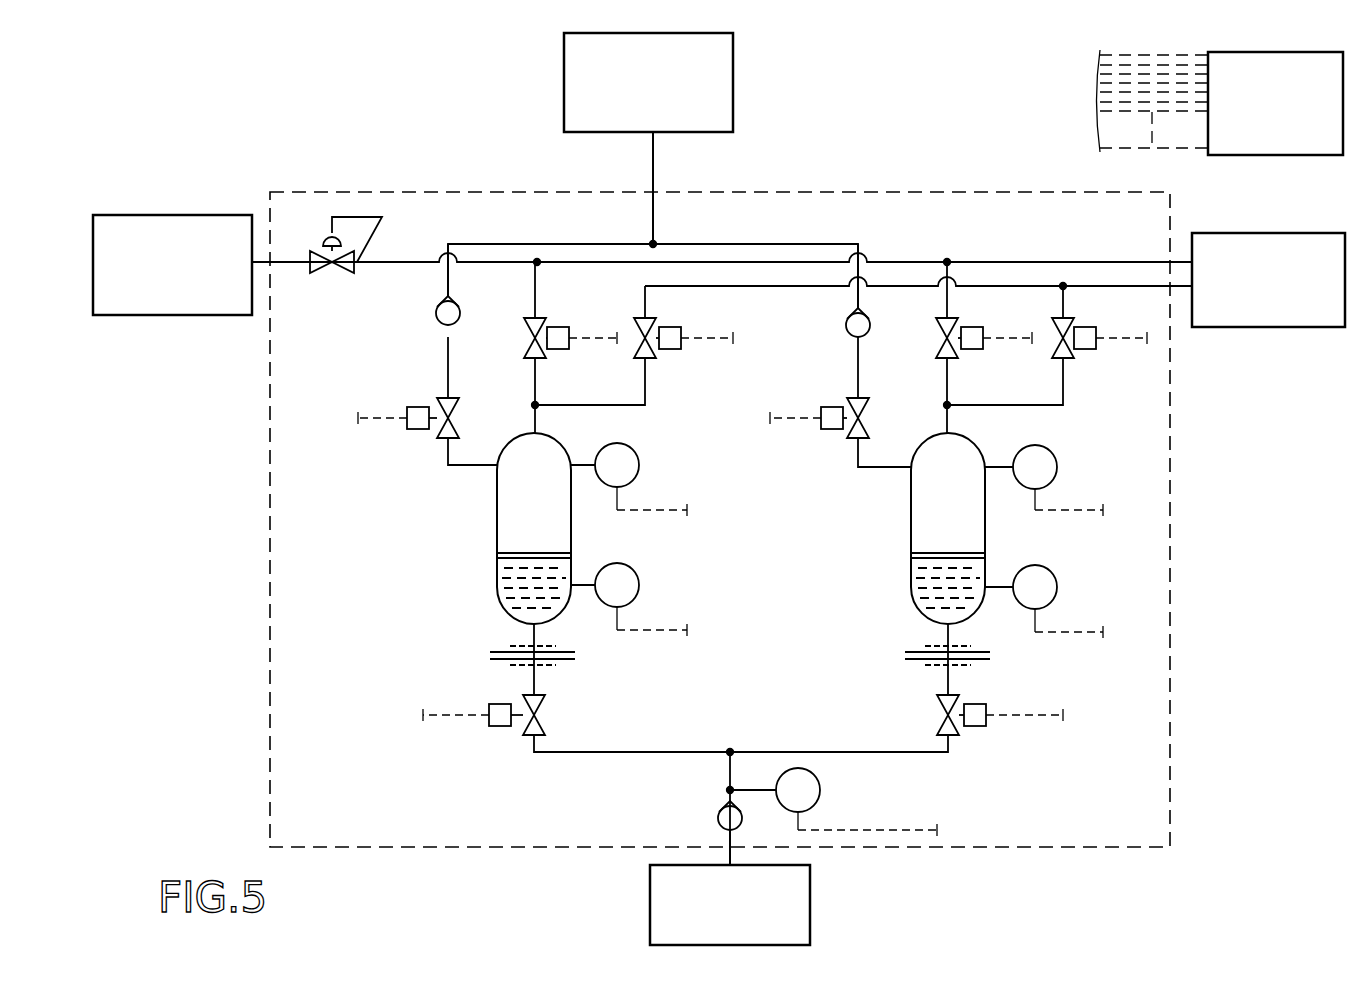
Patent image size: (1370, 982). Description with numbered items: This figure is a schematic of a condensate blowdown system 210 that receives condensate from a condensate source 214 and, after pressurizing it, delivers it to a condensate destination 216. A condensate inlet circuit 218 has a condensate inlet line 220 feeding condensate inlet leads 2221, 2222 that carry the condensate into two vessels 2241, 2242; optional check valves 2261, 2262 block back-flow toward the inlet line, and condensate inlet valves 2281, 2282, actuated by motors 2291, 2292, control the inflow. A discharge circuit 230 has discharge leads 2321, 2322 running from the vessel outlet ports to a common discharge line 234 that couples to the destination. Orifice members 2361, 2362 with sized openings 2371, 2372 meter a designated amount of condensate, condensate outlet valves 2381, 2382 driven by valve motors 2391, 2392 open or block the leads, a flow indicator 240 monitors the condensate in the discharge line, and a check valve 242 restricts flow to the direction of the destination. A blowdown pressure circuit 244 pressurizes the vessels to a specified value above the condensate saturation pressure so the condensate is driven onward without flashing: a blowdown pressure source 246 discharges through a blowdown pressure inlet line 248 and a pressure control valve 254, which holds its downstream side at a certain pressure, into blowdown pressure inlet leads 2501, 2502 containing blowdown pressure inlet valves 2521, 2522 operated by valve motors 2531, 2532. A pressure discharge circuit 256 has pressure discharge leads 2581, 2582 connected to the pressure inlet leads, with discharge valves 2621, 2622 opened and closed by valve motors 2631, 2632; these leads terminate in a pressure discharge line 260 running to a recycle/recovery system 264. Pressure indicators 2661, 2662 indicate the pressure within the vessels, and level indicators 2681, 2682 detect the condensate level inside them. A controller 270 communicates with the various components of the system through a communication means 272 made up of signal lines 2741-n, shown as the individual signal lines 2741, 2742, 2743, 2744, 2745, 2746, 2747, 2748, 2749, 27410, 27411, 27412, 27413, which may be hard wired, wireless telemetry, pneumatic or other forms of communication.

The blowdown system 210 is at (889, 178).
The condensate inlet circuit 218 is at (832, 186).
The condensate source 214 is at (670, 68).
The condensate destination 216 is at (752, 900).
The condensate inlet line 220 is at (665, 165).
The condensate inlet lead 2221 is at (460, 244).
The condensate inlet lead 2222 is at (718, 244).
The vessel 2241 is at (497, 568).
The vessel 2242 is at (911, 568).
The check valve 2261 is at (436, 314).
The check valve 2262 is at (845, 332).
The condensate inlet valve 2281 is at (440, 438).
The condensate inlet valve 2282 is at (855, 440).
The motor 2291 is at (418, 405).
The motor 2292 is at (830, 430).
The discharge circuit 230 is at (710, 752).
The discharge lead 2321 is at (578, 755).
The discharge lead 2322 is at (925, 755).
The discharge line 234 is at (722, 840).
The orifice member 2361 is at (505, 652).
The orifice member 2362 is at (920, 657).
The opening 2371 is at (520, 661).
The opening 2372 is at (965, 662).
The condensate outlet valve 2381 is at (548, 722).
The condensate outlet valve 2382 is at (935, 712).
The valve motor 2391 is at (498, 728).
The valve motor 2392 is at (995, 702).
The flow indicator 240 is at (822, 790).
The check valve 242 is at (718, 810).
The blowdown pressure circuit 244 is at (173, 330).
The blowdown pressure source 246 is at (194, 258).
The blowdown pressure inlet line 248 is at (263, 256).
The blowdown pressure inlet lead 2501 is at (545, 312).
The blowdown pressure inlet lead 2502 is at (897, 262).
The blowdown pressure inlet valve 2521 is at (530, 350).
The blowdown pressure inlet valve 2522 is at (936, 345).
The valve motor 2531 is at (570, 328).
The valve motor 2532 is at (980, 330).
The pressure control valve 254 is at (323, 275).
The pressure discharge circuit 256 is at (1117, 270).
The pressure discharge lead 2581 is at (656, 364).
The pressure discharge lead 2582 is at (1075, 370).
The pressure discharge line 260 is at (1085, 250).
The discharge valve 2621 is at (657, 320).
The discharge valve 2622 is at (1075, 320).
The valve motor 2631 is at (683, 350).
The valve motor 2632 is at (1092, 350).
The recycle/recovery system 264 is at (1290, 268).
The pressure indicator 2661 is at (640, 466).
The pressure indicator 2662 is at (1058, 468).
The level indicator 2681 is at (640, 587).
The level indicator 2682 is at (1058, 588).
The controller 270 is at (1294, 119).
The communication means 272 is at (1088, 78).
The signal lines 2741-n is at (1189, 160).
The signal line 2741 is at (362, 424).
The signal line 2742 is at (795, 425).
The signal line 2743 is at (432, 722).
The signal line 2744 is at (1030, 722).
The signal line 2745 is at (905, 832).
The signal line 2746 is at (600, 345).
The signal line 2747 is at (1015, 345).
The signal line 2748 is at (725, 340).
The signal line 2749 is at (1135, 345).
The signal line 27410 is at (690, 518).
The signal line 27411 is at (1080, 516).
The signal line 27412 is at (690, 636).
The signal line 27413 is at (1075, 640).